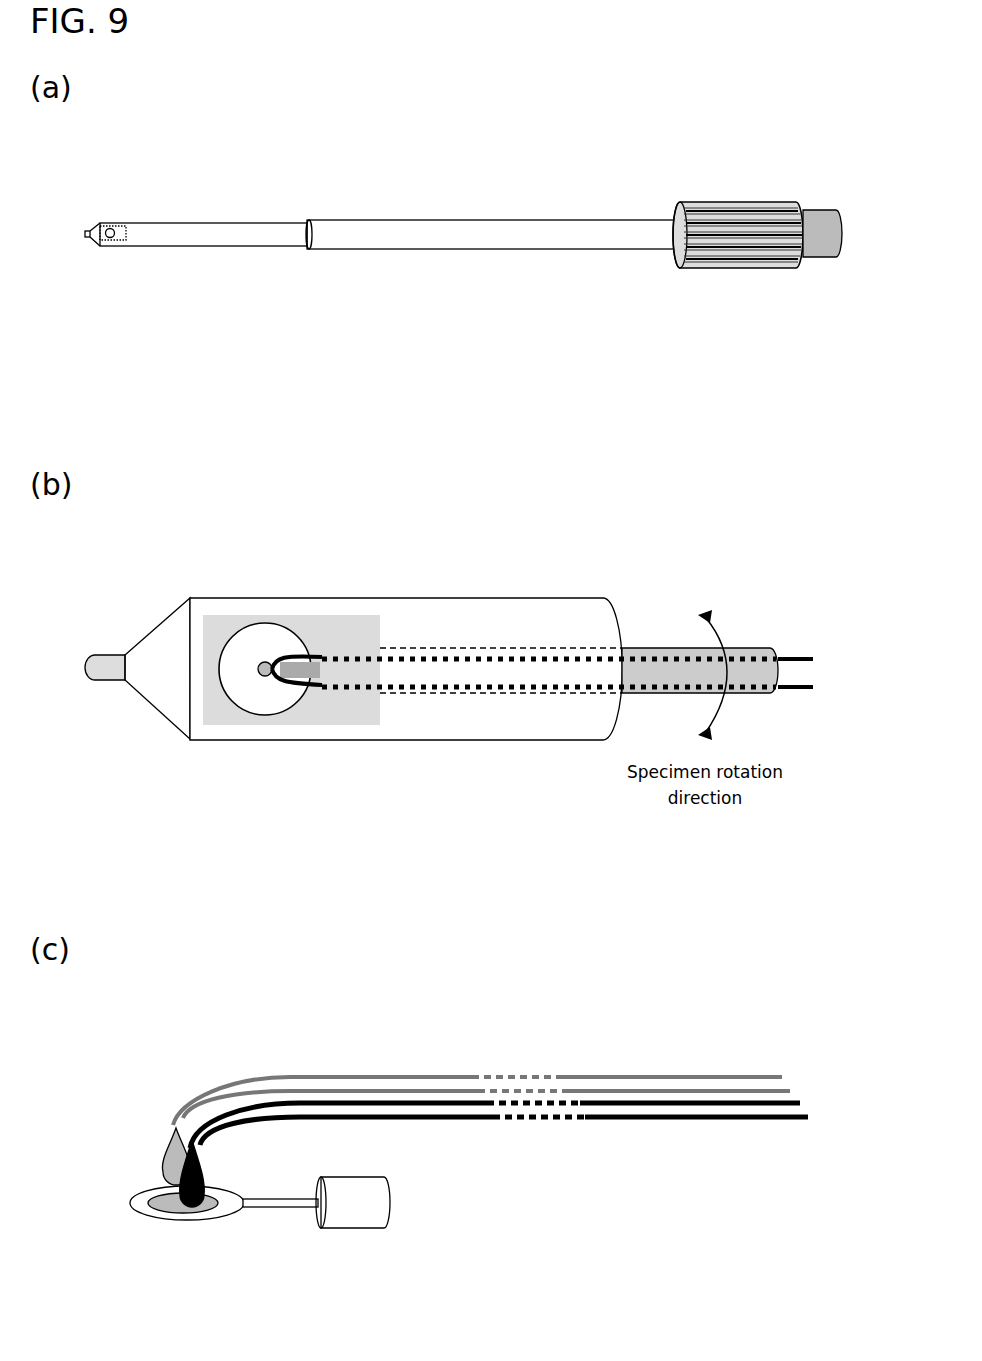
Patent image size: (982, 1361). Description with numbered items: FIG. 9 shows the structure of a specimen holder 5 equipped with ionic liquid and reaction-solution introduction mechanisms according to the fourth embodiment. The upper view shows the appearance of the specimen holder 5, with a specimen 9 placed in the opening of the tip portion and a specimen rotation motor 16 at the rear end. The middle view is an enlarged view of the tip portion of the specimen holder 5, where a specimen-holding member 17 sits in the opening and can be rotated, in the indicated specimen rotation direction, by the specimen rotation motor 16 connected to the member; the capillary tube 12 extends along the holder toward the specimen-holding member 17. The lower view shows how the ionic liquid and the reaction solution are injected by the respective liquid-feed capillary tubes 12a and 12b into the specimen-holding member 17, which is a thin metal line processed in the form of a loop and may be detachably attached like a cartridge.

The specimen holder 5 is at (480, 206).
The specimen 9 is at (113, 226).
The specimen rotation motor 16 is at (826, 222).
The capillary tube (microcapillary) 12 is at (292, 655).
The specimen-holding member 17 is at (270, 678).
The capillary tube for feeding ionic liquid 12a is at (308, 1082).
The capillary tube for feeding a reaction solution 12b is at (378, 1108).